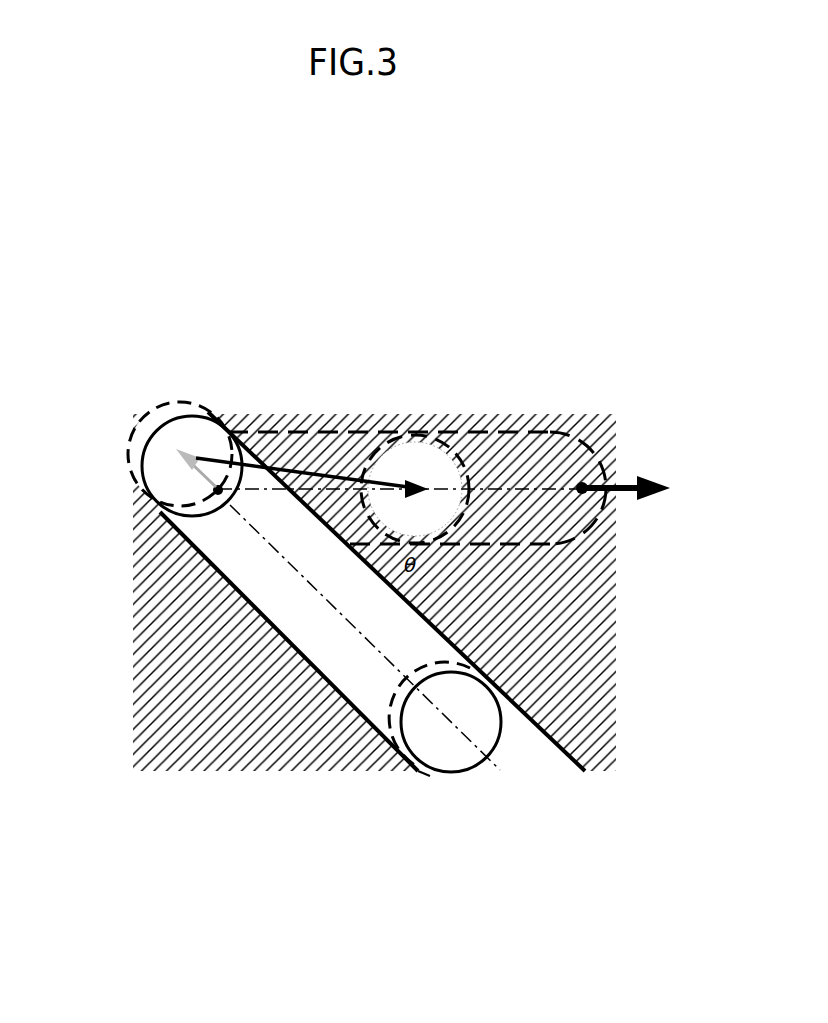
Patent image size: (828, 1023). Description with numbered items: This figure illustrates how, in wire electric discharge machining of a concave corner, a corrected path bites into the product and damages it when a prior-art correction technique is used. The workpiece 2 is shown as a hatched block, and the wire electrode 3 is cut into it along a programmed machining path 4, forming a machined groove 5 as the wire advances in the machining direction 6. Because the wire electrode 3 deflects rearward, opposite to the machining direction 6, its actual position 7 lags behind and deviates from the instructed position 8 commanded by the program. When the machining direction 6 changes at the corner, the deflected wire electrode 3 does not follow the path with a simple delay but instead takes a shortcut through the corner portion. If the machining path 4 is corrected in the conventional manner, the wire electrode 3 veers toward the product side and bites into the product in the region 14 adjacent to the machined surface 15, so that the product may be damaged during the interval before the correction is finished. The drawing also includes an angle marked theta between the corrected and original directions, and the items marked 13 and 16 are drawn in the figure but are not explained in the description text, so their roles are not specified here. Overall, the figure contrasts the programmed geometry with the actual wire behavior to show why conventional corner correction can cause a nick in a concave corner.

The workpiece 2 is at (558, 618).
The wire electrode 3 is at (478, 713).
The machining path 4 is at (287, 563).
The machined groove 5 is at (350, 677).
The machining direction 6 is at (648, 483).
The actual position of the wire electrode 7 is at (430, 776).
The instructed position of the wire electrode 8 is at (378, 722).
The tension pulley 13 is at (138, 483).
The region where the wire electrode bites into the product 14 is at (225, 415).
The machined surface 15 is at (347, 432).
The belt travel direction 16 is at (352, 622).